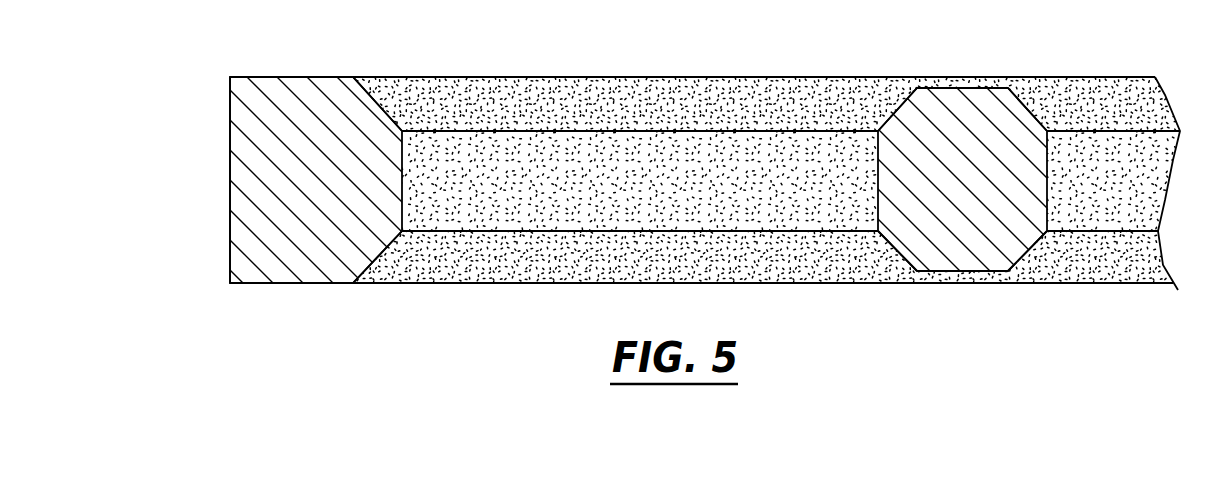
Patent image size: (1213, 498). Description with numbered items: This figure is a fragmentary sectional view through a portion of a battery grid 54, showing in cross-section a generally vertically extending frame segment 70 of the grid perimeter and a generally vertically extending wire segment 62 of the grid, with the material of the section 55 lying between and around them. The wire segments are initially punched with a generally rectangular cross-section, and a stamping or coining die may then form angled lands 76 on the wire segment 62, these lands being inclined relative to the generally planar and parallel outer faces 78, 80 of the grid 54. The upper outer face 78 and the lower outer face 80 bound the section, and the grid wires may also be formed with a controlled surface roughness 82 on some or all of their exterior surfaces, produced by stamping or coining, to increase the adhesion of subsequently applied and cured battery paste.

The grid 54 is at (319, 328).
The core material 55 is at (662, 195).
The vertically extending wire segment 62 is at (967, 193).
The vertically extending frame segment 70 is at (305, 197).
The angled land 76 is at (388, 98).
The outer face 78 is at (738, 76).
The outer face 80 is at (545, 284).
The controlled surface roughness 82 is at (596, 97).